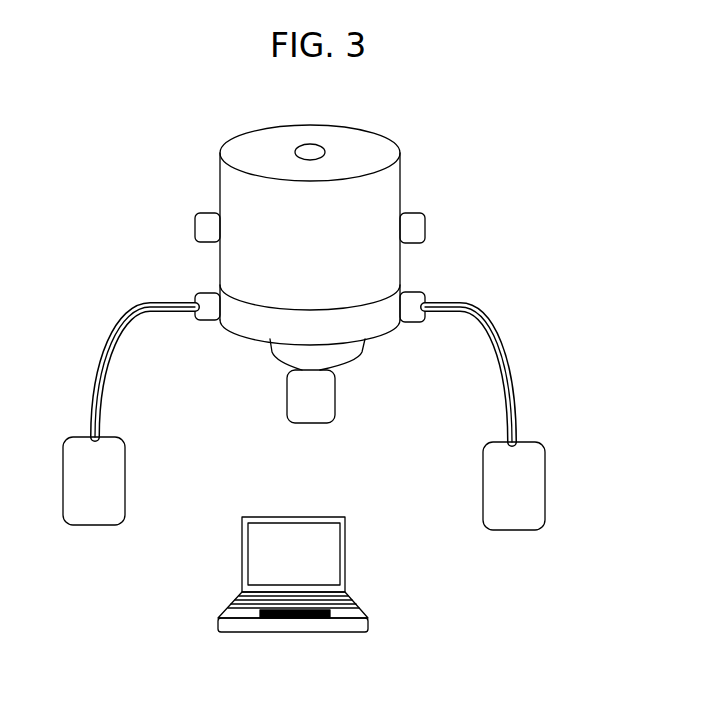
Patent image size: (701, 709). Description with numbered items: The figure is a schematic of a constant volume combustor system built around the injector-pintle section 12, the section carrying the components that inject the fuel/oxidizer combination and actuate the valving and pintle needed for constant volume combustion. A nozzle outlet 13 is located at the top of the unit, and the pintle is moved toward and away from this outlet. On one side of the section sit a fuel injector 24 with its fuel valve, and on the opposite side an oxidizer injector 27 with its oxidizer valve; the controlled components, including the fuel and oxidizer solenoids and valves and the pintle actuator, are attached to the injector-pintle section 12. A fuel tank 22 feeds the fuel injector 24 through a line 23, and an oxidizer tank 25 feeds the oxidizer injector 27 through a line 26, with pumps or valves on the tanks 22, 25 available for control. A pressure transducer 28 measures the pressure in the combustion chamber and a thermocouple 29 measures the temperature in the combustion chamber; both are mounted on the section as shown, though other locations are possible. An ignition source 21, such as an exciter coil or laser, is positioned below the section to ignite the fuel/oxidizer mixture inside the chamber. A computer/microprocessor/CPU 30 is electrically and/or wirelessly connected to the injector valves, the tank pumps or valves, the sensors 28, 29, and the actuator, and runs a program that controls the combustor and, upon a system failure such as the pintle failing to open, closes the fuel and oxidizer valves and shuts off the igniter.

The injector-pintle section 12 is at (230, 295).
The nozzle outlet 13 is at (313, 150).
The ignition source 21 is at (299, 412).
The fuel tank 22 is at (499, 501).
The right tube 23 is at (505, 362).
The fuel injector 24 is at (425, 297).
The oxidizer tank 25 is at (82, 491).
The left tube 26 is at (108, 350).
The oxidizer injector 27 is at (193, 298).
The pressure transducer 28 is at (425, 218).
The thermocouple 29 is at (193, 220).
The computer/microprocessor/CPU 30 is at (353, 615).